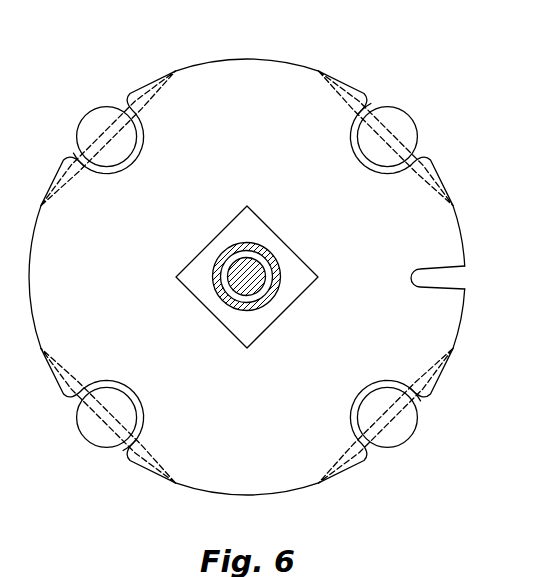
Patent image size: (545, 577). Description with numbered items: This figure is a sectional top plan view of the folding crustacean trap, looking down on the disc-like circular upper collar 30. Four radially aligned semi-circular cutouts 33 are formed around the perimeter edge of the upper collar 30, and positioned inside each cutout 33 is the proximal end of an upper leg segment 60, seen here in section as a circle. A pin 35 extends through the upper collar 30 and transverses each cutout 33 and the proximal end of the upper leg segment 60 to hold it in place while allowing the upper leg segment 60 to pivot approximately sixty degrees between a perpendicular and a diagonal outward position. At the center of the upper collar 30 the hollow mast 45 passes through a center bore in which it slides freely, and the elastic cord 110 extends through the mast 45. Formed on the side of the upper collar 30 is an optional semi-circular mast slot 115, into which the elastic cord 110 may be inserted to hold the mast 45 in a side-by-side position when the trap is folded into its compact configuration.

The upper collar 30 is at (290, 58).
The semi-circular cutout 33 is at (80, 157).
The pin 35 is at (155, 88).
The upper leg segment 60 is at (98, 122).
The mast 45 is at (215, 290).
The elastic cord 110 is at (243, 265).
The mast slot 115 is at (452, 277).